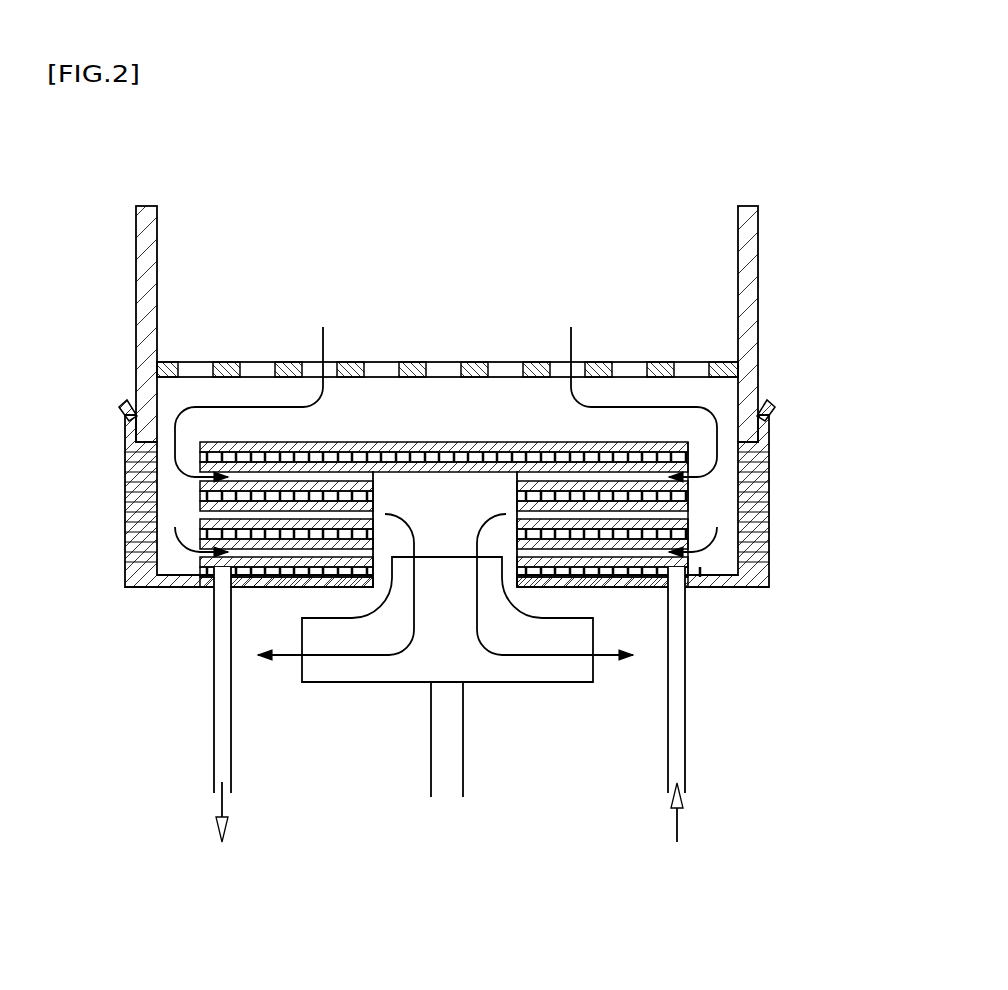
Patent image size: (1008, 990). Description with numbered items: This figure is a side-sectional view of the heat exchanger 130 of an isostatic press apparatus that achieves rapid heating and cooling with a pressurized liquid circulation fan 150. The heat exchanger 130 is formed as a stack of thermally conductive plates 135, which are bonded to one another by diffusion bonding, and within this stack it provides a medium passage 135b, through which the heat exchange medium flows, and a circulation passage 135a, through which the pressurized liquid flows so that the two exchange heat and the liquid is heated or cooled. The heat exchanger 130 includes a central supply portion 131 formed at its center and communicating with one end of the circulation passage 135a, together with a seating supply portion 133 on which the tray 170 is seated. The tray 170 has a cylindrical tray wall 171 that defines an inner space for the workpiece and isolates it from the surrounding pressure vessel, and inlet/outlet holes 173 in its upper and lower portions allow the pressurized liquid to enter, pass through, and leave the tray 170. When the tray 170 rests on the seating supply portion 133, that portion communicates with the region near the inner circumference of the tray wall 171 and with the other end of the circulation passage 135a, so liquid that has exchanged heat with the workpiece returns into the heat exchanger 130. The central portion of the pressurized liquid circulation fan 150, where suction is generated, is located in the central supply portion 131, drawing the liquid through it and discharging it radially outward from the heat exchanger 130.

The heat exchanger 130 is at (778, 442).
The central supply portion 131 is at (452, 498).
The seating supply portion 133 is at (712, 499).
The thermally conductive plates 135 is at (516, 560).
The circulation passage 135a is at (620, 440).
The medium passage 135b is at (563, 440).
The pressurized liquid circulation fan 150 is at (525, 673).
The tray 170 is at (403, 296).
The tray wall 171 is at (137, 297).
The inlet/outlet holes 173 is at (226, 362).